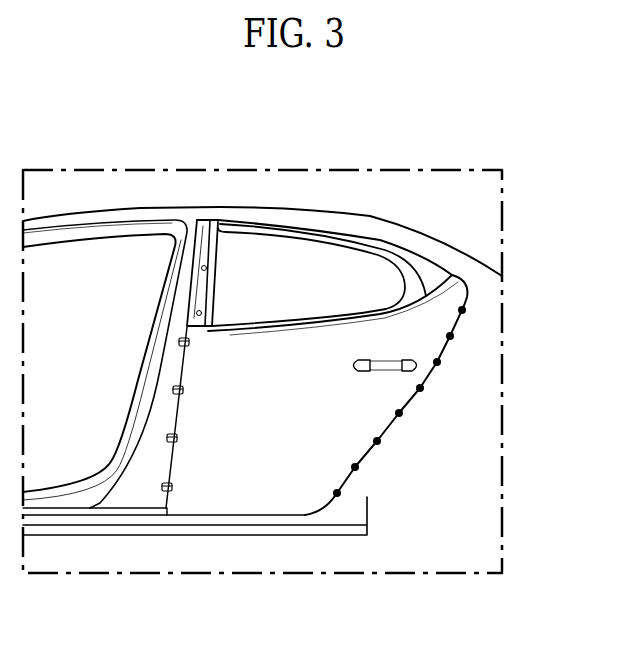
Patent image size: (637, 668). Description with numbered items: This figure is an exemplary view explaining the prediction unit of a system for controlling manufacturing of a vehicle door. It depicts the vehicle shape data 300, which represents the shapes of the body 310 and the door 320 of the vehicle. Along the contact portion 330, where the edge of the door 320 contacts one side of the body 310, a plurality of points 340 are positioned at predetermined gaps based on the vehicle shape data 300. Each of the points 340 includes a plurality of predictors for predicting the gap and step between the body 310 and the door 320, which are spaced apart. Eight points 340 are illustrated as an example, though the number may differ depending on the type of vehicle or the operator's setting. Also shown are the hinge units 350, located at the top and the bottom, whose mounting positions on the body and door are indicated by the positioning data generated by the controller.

The vehicle shape data 300 is at (316, 361).
The body 310 is at (442, 250).
The door 320 is at (437, 275).
The contact portion 330 is at (319, 518).
The points 340 is at (337, 493).
The hinge units 350 is at (190, 343).